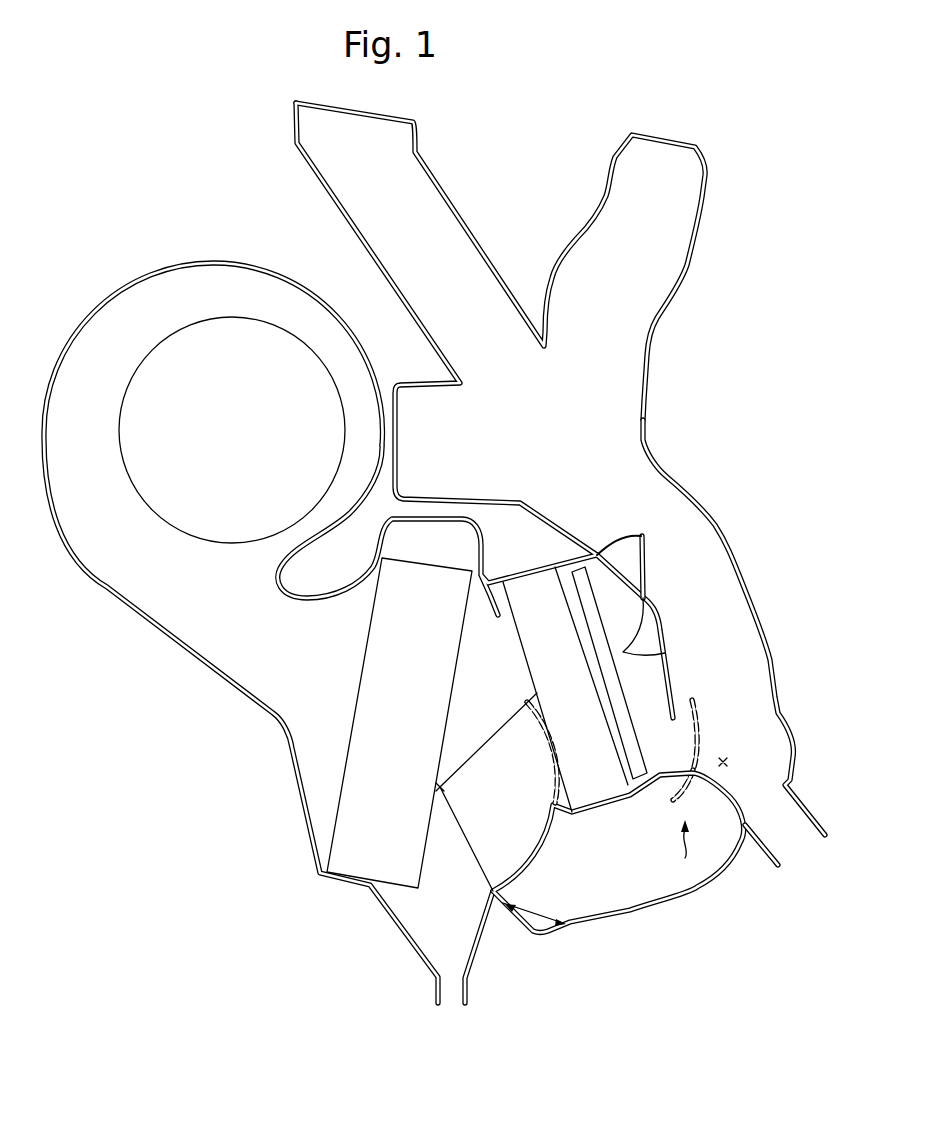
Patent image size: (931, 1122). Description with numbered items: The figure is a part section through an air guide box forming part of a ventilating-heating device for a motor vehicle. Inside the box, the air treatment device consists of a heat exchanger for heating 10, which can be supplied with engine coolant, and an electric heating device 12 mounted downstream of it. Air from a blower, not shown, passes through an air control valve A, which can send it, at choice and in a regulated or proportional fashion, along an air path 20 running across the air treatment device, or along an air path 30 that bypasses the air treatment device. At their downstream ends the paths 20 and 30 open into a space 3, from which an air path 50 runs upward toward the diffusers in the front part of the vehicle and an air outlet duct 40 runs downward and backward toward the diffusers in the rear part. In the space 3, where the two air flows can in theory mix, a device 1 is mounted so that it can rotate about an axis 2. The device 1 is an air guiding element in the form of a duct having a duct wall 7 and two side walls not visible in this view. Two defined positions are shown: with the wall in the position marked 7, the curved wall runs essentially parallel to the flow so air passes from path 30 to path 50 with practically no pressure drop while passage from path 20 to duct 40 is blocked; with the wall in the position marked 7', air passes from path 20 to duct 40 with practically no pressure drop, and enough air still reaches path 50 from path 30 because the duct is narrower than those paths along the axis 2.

The device 1 is at (683, 852).
The axis 2 is at (723, 762).
The space 3 is at (755, 786).
The duct wall 7 is at (705, 725).
The duct wall 7' is at (699, 804).
The heat exchanger for heating 10 is at (539, 639).
The electric heating device 12 is at (592, 615).
The air path 20 is at (664, 734).
The air path 30 is at (606, 866).
The air outlet duct 40 is at (804, 851).
The air path 50 is at (722, 633).
The air control valve A is at (546, 827).